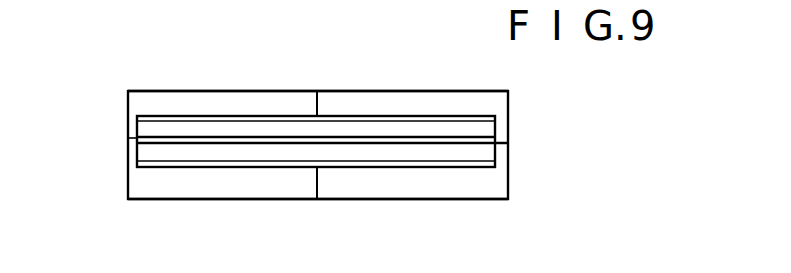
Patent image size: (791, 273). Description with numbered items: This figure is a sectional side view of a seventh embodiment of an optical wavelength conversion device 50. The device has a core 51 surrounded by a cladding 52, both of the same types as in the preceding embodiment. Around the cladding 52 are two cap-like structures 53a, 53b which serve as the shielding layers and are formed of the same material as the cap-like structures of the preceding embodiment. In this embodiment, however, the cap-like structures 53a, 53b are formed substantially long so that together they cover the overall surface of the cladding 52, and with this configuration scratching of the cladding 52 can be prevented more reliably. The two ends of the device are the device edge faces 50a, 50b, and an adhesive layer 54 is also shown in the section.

The optical wavelength conversion device 50 is at (355, 75).
The device edge face 50a is at (128, 138).
The device edge face 50b is at (508, 143).
The core 51 is at (394, 143).
The cladding 52 is at (233, 128).
The cap-like structure 53a is at (227, 199).
The cap-like structure 53b is at (435, 188).
The adhesive layer 54 is at (350, 170).